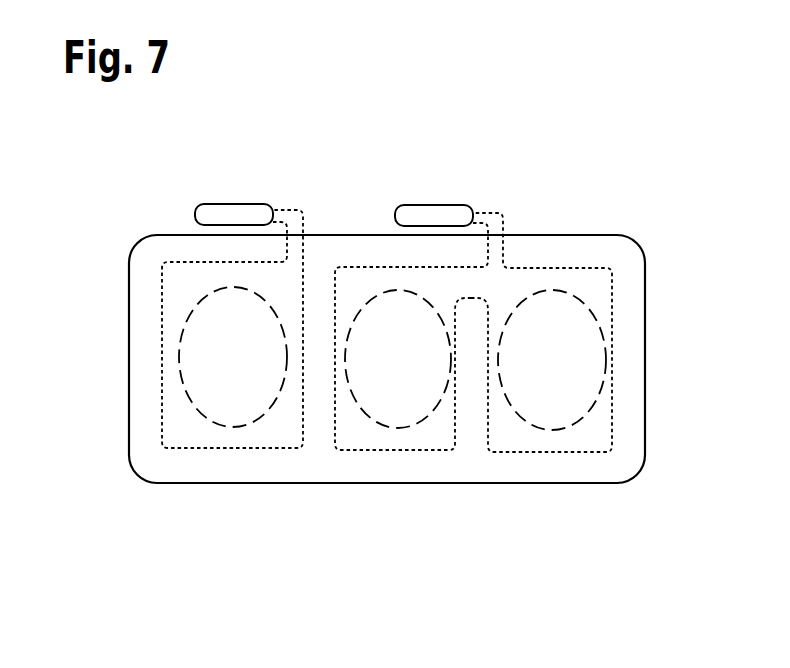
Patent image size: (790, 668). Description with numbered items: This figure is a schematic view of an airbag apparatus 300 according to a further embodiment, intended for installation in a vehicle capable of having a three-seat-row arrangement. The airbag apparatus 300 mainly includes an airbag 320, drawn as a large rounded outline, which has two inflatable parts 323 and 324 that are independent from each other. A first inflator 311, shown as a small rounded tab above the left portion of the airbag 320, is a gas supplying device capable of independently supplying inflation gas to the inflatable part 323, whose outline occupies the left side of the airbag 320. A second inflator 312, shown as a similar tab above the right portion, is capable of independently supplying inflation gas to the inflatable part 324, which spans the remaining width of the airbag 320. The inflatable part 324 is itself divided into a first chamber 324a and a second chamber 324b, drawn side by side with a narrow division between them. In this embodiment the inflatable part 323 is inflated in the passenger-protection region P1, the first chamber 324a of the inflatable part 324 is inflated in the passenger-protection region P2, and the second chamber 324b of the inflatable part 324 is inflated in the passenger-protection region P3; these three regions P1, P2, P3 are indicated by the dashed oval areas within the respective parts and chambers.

The airbag apparatus 300 is at (401, 137).
The airbag 320 is at (641, 252).
The first inflator 311 is at (235, 213).
The second inflator 312 is at (443, 216).
The inflatable part 323 is at (202, 451).
The inflatable part 324 is at (548, 566).
The first chamber 324a is at (427, 453).
The second chamber 324b is at (537, 453).
The passenger-protection region P1 is at (250, 410).
The passenger-protection region P2 is at (388, 408).
The passenger-protection region P3 is at (565, 415).